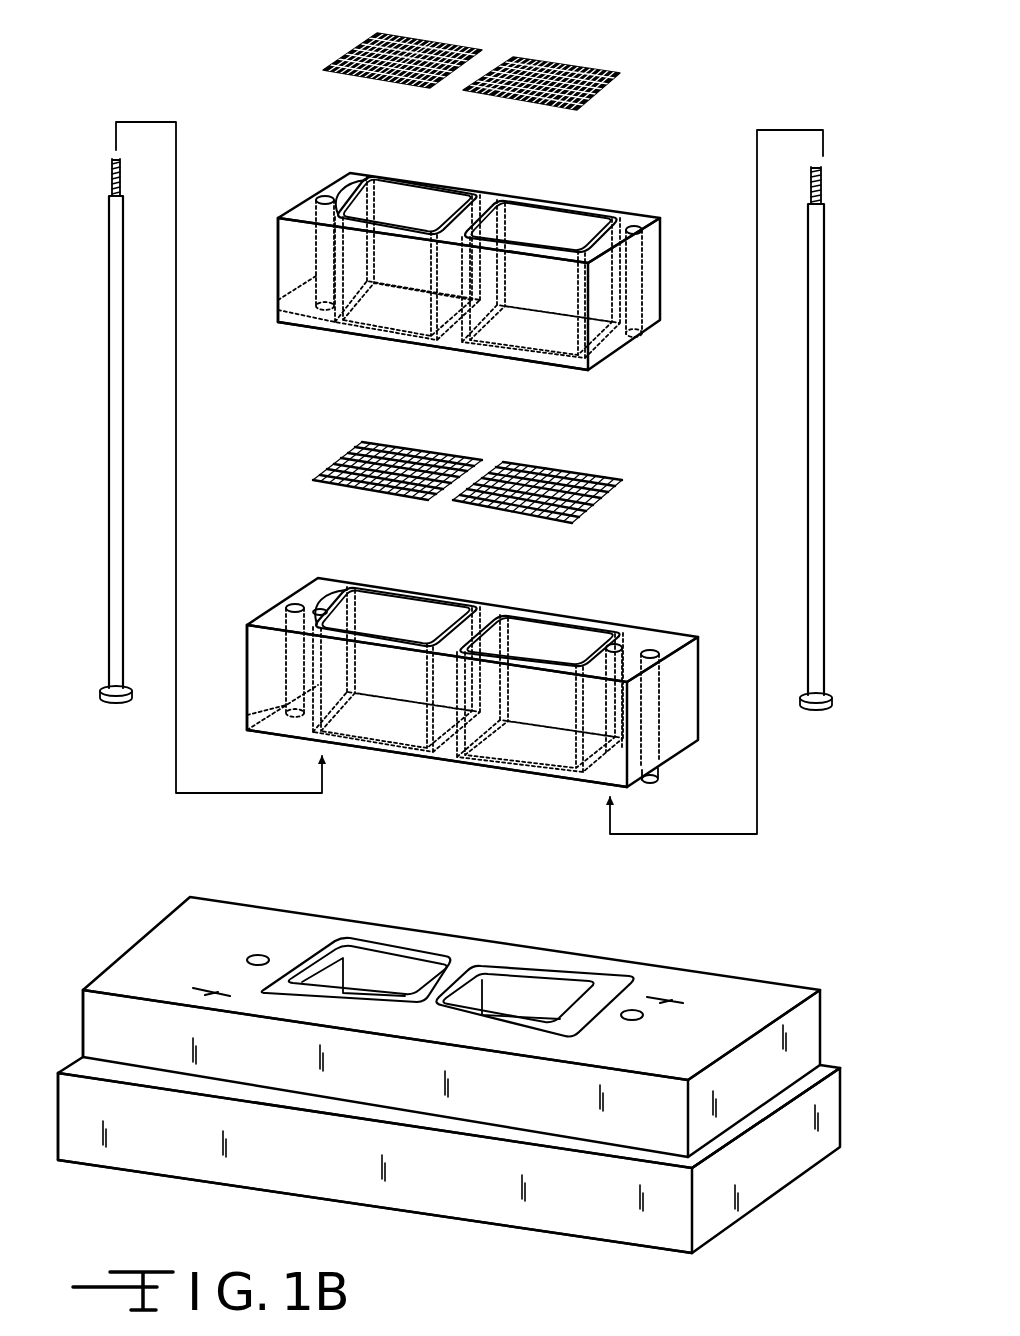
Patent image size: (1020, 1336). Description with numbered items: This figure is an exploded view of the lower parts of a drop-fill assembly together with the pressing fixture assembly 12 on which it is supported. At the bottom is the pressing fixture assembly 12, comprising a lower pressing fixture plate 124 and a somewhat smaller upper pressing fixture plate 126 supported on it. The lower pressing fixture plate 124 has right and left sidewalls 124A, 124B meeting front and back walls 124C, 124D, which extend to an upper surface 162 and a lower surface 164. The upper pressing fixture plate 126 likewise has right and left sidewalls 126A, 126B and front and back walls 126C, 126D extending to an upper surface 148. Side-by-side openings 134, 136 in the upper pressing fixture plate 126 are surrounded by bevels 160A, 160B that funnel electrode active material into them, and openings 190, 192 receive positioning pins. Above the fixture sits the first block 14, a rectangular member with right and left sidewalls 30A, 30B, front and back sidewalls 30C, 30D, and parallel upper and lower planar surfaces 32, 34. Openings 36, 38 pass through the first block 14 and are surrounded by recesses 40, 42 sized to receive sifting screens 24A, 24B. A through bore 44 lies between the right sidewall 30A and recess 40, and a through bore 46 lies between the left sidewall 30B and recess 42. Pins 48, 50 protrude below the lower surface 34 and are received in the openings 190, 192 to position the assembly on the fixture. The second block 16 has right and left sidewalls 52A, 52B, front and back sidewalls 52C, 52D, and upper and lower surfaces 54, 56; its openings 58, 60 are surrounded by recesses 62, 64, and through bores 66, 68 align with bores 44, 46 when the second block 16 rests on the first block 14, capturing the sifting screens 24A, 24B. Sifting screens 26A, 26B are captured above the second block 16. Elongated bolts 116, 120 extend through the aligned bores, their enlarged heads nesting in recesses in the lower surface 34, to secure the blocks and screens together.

The pressing fixture assembly 12 is at (468, 1078).
The first block 14 is at (468, 662).
The second block 16 is at (458, 264).
The sifting screen 24A is at (405, 445).
The sifting screen 24B is at (578, 465).
The sifting screen 26A is at (372, 40).
The sifting screen 26B is at (520, 62).
The right sidewall 30A is at (680, 680).
The left sidewall 30B is at (243, 690).
The front sidewall 30C is at (568, 766).
The back sidewall 30D is at (630, 625).
The upper planar surface 32 is at (330, 594).
The lower planar surface 34 is at (420, 762).
The opening 36 is at (545, 630).
The opening 38 is at (445, 612).
The recess 40 is at (575, 658).
The recess 42 is at (338, 618).
The through bore 44 is at (655, 640).
The through bore 46 is at (318, 610).
The pin 48 is at (660, 771).
The pin 50 is at (275, 722).
The right sidewall 52A is at (648, 256).
The left sidewall 52B is at (277, 300).
The front sidewall 52C is at (325, 325).
The back sidewall 52D is at (388, 178).
The upper planar surface 54 is at (336, 183).
The lower planar surface 56 is at (399, 347).
The opening 58 is at (542, 220).
The opening 60 is at (432, 202).
The recess 62 is at (578, 245).
The recess 64 is at (360, 210).
The through bore 66 is at (648, 333).
The through bore 68 is at (298, 270).
The elongated bolt 116 is at (828, 440).
The elongated bolt 120 is at (106, 428).
The lower pressing fixture plate 124 is at (468, 1170).
The right sidewall 124A is at (838, 1108).
The left sidewall 124B is at (76, 1133).
The front wall 124C is at (85, 1148).
The back wall 124D is at (843, 1090).
The upper pressing fixture plate 126 is at (467, 1061).
The right sidewall 126A is at (822, 1033).
The left sidewall 126B is at (80, 1017).
The front wall 126C is at (650, 1118).
The back wall 126D is at (752, 978).
The opening 134 is at (518, 995).
The opening 136 is at (357, 965).
The upper surface 148 is at (662, 975).
The bevel 160A is at (582, 988).
The bevel 160B is at (430, 962).
The upper surface 162 is at (766, 1112).
The lower surface 164 is at (727, 1234).
The opening 190 is at (634, 1021).
The opening 192 is at (257, 956).